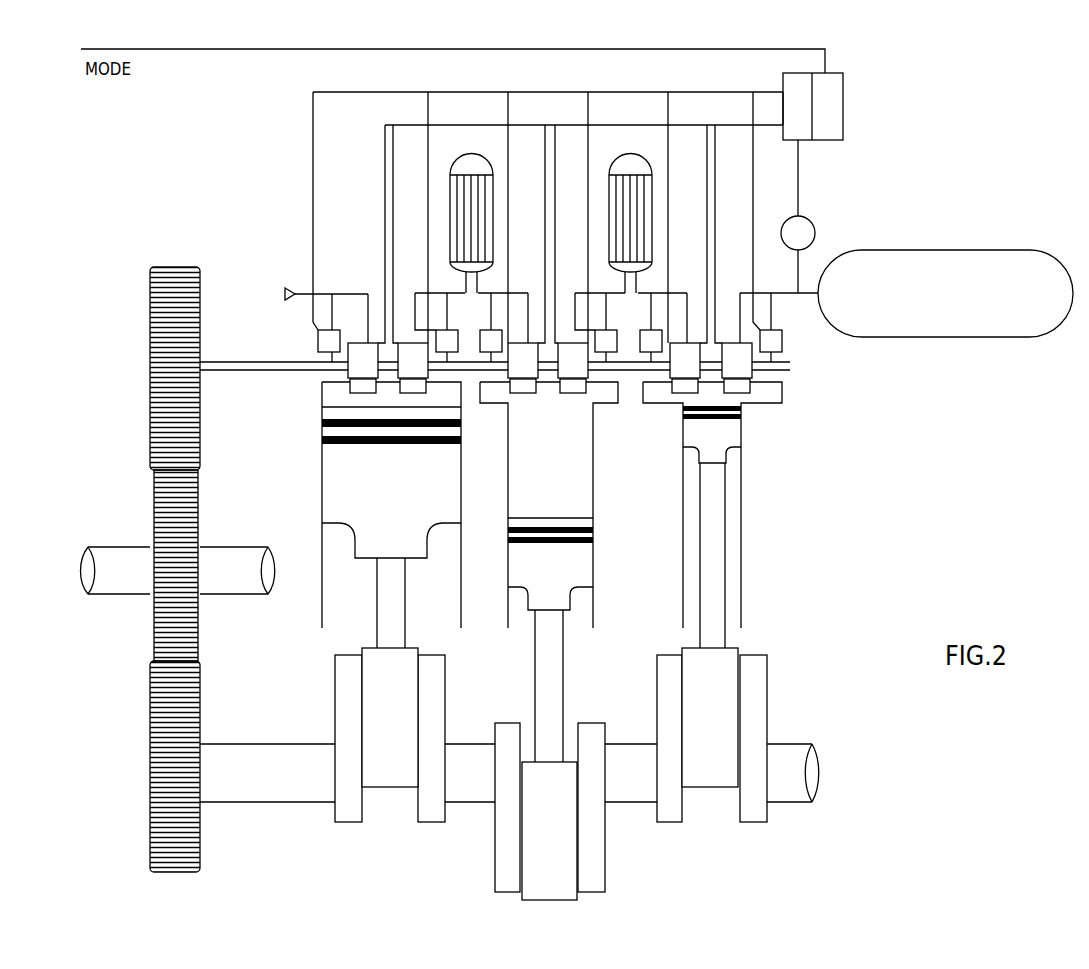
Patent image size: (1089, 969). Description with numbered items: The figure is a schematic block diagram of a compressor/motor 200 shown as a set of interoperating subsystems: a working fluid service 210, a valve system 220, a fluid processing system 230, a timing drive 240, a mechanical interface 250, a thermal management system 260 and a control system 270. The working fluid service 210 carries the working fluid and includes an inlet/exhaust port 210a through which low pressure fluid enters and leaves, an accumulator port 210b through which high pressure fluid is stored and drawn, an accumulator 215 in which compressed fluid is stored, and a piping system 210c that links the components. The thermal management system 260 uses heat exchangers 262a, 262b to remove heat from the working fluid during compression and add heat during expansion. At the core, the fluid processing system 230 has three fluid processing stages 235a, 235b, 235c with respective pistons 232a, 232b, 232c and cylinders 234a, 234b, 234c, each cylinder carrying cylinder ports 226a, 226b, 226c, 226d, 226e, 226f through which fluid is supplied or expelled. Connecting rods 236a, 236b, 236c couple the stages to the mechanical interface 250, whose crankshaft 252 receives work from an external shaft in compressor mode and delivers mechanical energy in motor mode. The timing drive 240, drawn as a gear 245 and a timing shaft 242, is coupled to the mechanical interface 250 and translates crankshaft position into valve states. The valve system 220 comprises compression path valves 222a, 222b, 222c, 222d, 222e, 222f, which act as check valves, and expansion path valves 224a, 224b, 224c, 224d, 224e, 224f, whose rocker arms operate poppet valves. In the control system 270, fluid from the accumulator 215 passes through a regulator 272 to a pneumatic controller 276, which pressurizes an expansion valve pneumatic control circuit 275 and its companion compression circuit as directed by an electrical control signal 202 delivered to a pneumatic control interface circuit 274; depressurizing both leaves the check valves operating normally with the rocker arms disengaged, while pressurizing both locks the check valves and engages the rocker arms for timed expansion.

The compressor/motor 200 is at (975, 150).
The electrical control signal 202 is at (265, 50).
The working fluid service 210 is at (250, 242).
The inlet/exhaust port 210a is at (307, 290).
The accumulator port 210b is at (812, 297).
The piping system 210c is at (300, 307).
The accumulator 215 is at (980, 250).
The valve system 220 is at (852, 408).
The compression path valve 222a is at (333, 330).
The compression path valve 222b is at (440, 330).
The compression path valve 222c is at (493, 330).
The compression path valve 222d is at (600, 330).
The compression path valve 222e is at (652, 330).
The compression path valve 222f is at (773, 343).
The expansion path valve 224a is at (355, 362).
The expansion path valve 224b is at (415, 362).
The expansion path valve 224c is at (530, 380).
The expansion path valve 224d is at (578, 366).
The expansion path valve 224e is at (678, 365).
The expansion path valve 224f is at (742, 368).
The cylinder port 226a is at (358, 388).
The cylinder port 226b is at (410, 393).
The cylinder port 226c is at (533, 387).
The cylinder port 226d is at (583, 393).
The cylinder port 226e is at (687, 393).
The cylinder port 226f is at (740, 390).
The fluid processing system 230 is at (812, 550).
The piston 232a is at (320, 492).
The piston 232b is at (583, 562).
The piston 232c is at (736, 438).
The cylinder 234a is at (332, 625).
The cylinder 234b is at (580, 485).
The cylinder 234c is at (738, 550).
The fluid processing stage 235a is at (272, 520).
The fluid processing stage 235b is at (590, 480).
The fluid processing stage 235c is at (770, 487).
The connecting rod 236a is at (388, 770).
The connecting rod 236b is at (545, 878).
The connecting rod 236c is at (710, 772).
The timing drive 240 is at (97, 526).
The timing shaft 242 is at (232, 367).
The gear 245 is at (150, 365).
The mechanical interface 250 is at (790, 700).
The crankshaft 252 is at (815, 758).
The thermal management system 260 is at (373, 165).
The heat exchanger 262a is at (480, 163).
The heat exchanger 262b is at (639, 163).
The control system 270 is at (848, 164).
The regulator 272 is at (815, 233).
The pneumatic control interface circuit 274 is at (840, 118).
The expansion valve pneumatic control circuit 275 is at (648, 123).
The pneumatic controller 276 is at (802, 85).